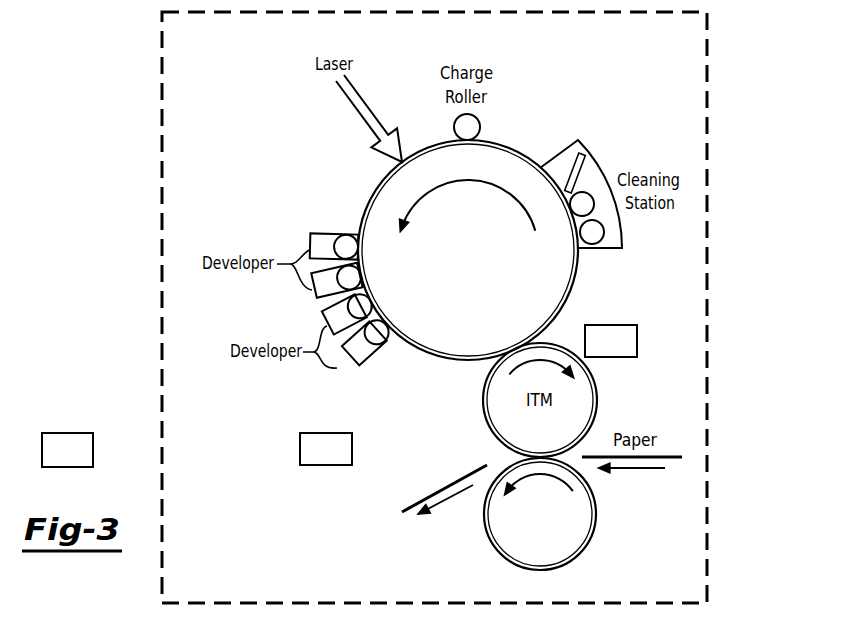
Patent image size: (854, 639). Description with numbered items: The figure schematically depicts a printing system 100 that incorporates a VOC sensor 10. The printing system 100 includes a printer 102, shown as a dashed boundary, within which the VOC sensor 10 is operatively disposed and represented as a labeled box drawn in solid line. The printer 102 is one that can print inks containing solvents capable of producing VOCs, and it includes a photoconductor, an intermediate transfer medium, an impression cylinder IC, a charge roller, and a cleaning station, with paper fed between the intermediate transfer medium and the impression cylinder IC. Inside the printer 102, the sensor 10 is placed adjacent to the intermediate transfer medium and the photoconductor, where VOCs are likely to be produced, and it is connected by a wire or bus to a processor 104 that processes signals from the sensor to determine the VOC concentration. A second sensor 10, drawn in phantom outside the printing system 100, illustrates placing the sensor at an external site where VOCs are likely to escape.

The printing system 100 is at (713, 78).
The printer 102 is at (543, 146).
The processor 104 is at (337, 458).
The VOC sensor 10 is at (614, 325).
The impression cylinder IC is at (597, 514).